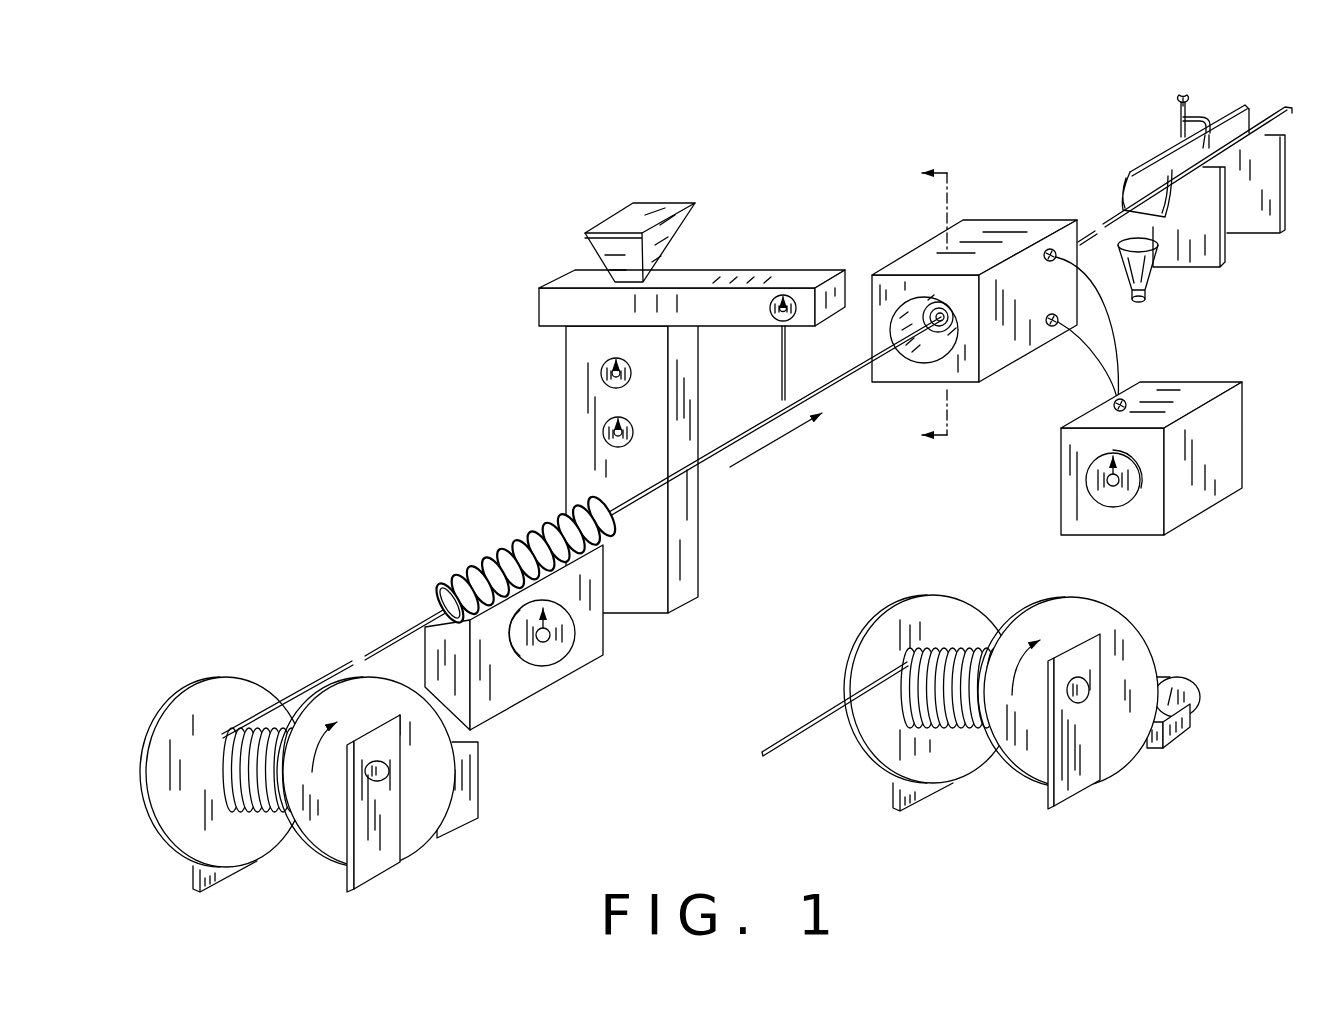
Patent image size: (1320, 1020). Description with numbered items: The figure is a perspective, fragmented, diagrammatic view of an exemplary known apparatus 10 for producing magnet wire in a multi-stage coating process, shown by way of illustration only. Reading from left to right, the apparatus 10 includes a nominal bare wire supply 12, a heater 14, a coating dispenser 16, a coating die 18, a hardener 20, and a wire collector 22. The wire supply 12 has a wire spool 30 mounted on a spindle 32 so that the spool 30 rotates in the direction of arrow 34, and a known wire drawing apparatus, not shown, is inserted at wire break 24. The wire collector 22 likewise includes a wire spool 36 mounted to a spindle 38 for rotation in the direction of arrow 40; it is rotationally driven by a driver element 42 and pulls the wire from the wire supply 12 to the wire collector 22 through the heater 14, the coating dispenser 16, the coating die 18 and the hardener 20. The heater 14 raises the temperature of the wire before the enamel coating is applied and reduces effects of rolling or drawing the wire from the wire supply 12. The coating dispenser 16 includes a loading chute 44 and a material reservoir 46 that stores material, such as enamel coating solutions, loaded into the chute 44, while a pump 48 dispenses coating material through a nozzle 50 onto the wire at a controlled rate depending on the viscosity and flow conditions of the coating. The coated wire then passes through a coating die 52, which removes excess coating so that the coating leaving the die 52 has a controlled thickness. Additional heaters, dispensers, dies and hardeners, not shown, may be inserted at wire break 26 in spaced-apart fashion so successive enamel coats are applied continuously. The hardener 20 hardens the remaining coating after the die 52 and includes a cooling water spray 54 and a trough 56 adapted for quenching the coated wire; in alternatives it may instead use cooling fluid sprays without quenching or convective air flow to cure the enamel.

The apparatus 10 is at (440, 382).
The bare wire supply 12 is at (277, 657).
The heater 14 is at (488, 520).
The coating dispenser 16 is at (578, 245).
The coating die 18 is at (900, 212).
The hardener 20 is at (1130, 130).
The wire collector 22 is at (950, 582).
The wire break 24 is at (358, 650).
The wire break 26 is at (1102, 215).
The wire spool 30 is at (383, 777).
The spindle 32 is at (440, 745).
The arrow 34 is at (347, 745).
The wire spool 36 is at (1125, 630).
The spindle 38 is at (1087, 687).
The arrow 40 is at (1033, 670).
The driver element 42 is at (1187, 697).
The loading chute 44 is at (607, 215).
The material reservoir 46 is at (590, 425).
The pump 48 is at (705, 303).
The nozzle 50 is at (781, 347).
The coating die 52 is at (928, 262).
The cooling water spray 54 is at (1190, 132).
The trough 56 is at (1147, 183).